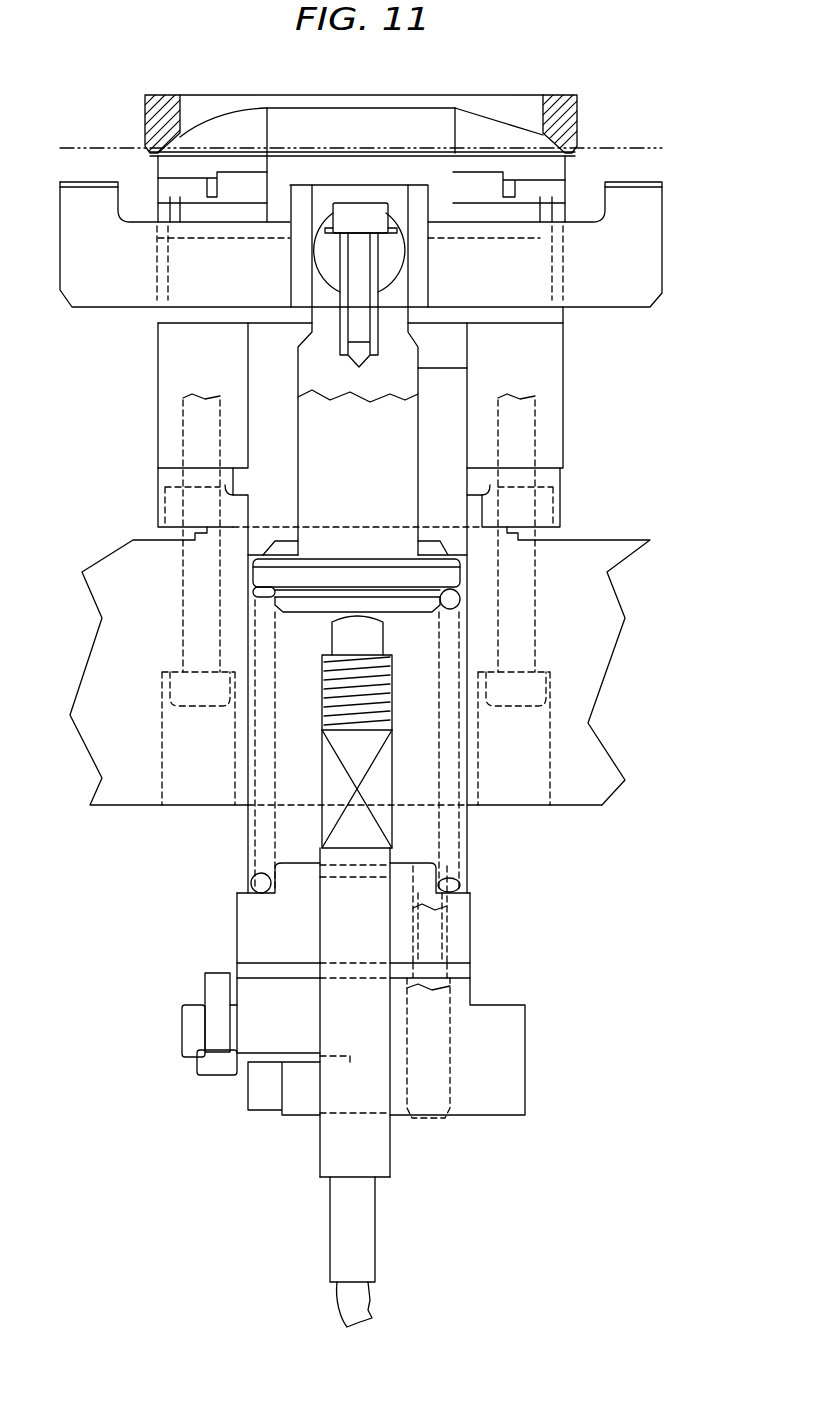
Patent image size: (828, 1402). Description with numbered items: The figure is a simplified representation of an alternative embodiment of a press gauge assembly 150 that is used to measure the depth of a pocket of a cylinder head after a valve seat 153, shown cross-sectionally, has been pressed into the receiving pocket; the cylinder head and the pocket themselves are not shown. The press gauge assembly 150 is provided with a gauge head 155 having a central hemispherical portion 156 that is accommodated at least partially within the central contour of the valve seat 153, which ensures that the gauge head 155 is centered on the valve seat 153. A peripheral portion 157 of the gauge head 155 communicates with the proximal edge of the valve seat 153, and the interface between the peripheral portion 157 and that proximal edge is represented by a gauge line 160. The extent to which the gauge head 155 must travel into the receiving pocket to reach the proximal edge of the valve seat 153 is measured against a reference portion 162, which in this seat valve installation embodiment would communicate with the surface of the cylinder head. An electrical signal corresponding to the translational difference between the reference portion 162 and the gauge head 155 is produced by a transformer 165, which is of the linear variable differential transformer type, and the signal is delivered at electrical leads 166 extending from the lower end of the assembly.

The press gauge assembly 150 is at (675, 431).
The valve seat 153 is at (143, 127).
The gauge head 155 is at (232, 128).
The central hemispherical portion 156 is at (292, 124).
The peripheral portion 157 is at (560, 156).
The gauge line 160 is at (600, 147).
The reference portion 162 is at (643, 208).
The transformer 165 is at (377, 792).
The electrical leads 166 is at (372, 1297).